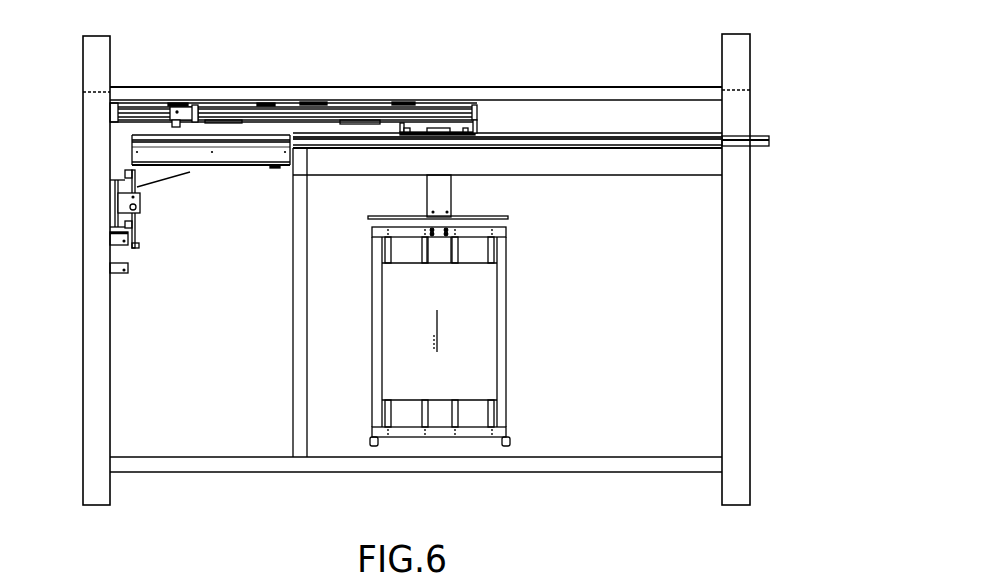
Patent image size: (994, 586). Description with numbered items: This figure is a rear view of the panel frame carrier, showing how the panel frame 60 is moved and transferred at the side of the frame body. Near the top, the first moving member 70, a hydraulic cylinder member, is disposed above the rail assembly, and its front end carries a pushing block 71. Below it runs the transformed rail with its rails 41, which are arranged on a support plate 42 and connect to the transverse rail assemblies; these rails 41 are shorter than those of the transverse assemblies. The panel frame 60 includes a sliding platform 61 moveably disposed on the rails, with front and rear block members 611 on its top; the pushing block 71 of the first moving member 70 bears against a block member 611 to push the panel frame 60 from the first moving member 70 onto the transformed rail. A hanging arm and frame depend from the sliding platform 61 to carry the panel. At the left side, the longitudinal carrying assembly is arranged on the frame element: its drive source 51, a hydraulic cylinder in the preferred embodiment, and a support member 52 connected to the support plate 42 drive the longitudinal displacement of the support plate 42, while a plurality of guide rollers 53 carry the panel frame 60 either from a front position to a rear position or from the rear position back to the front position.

The first moving member 70 is at (346, 119).
The pushing block 71 is at (404, 126).
The panel frame 60 is at (487, 126).
The sliding platform 61 is at (466, 138).
The block member 611 is at (401, 132).
The rail 41 is at (200, 140).
The support plate 42 is at (259, 152).
The drive source 51 is at (124, 257).
The support member 52 is at (140, 238).
The guide roller 53 is at (126, 171).